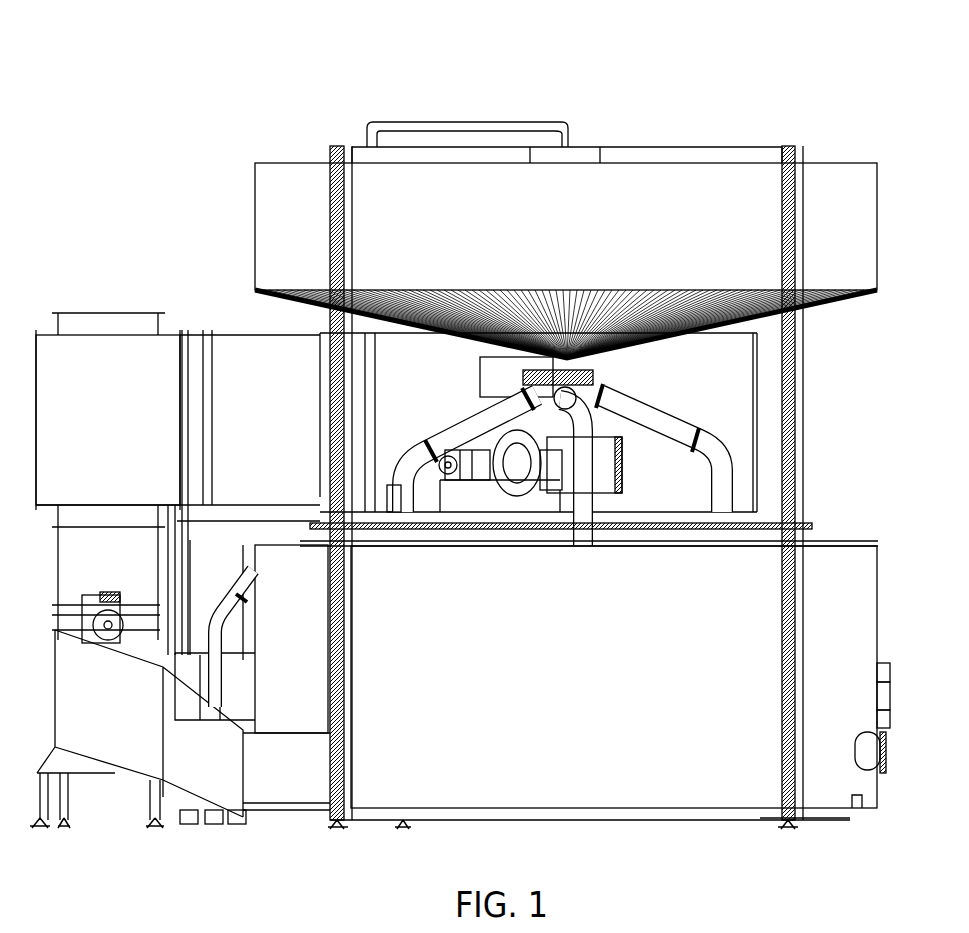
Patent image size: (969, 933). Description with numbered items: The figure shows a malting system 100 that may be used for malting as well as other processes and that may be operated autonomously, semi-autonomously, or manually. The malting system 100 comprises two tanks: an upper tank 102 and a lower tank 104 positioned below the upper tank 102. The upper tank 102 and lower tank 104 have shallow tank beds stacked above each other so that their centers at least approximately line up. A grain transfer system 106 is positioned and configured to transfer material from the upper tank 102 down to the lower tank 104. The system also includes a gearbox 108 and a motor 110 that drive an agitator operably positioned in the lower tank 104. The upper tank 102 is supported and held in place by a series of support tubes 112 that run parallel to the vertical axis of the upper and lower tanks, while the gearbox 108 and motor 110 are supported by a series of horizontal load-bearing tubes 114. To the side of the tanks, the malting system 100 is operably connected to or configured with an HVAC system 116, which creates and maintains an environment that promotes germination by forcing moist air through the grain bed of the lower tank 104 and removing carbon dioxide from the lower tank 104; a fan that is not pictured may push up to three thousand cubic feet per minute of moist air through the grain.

The malting system 100 is at (188, 124).
The upper tank 102 is at (583, 237).
The lower tank 104 is at (578, 681).
The grain transfer system 106 is at (632, 385).
The gearbox 108 is at (627, 458).
The motor 110 is at (470, 447).
The support tubes 112 is at (803, 380).
The horizontal load-bearing tubes 114 is at (762, 517).
The HVAC system 116 is at (241, 566).